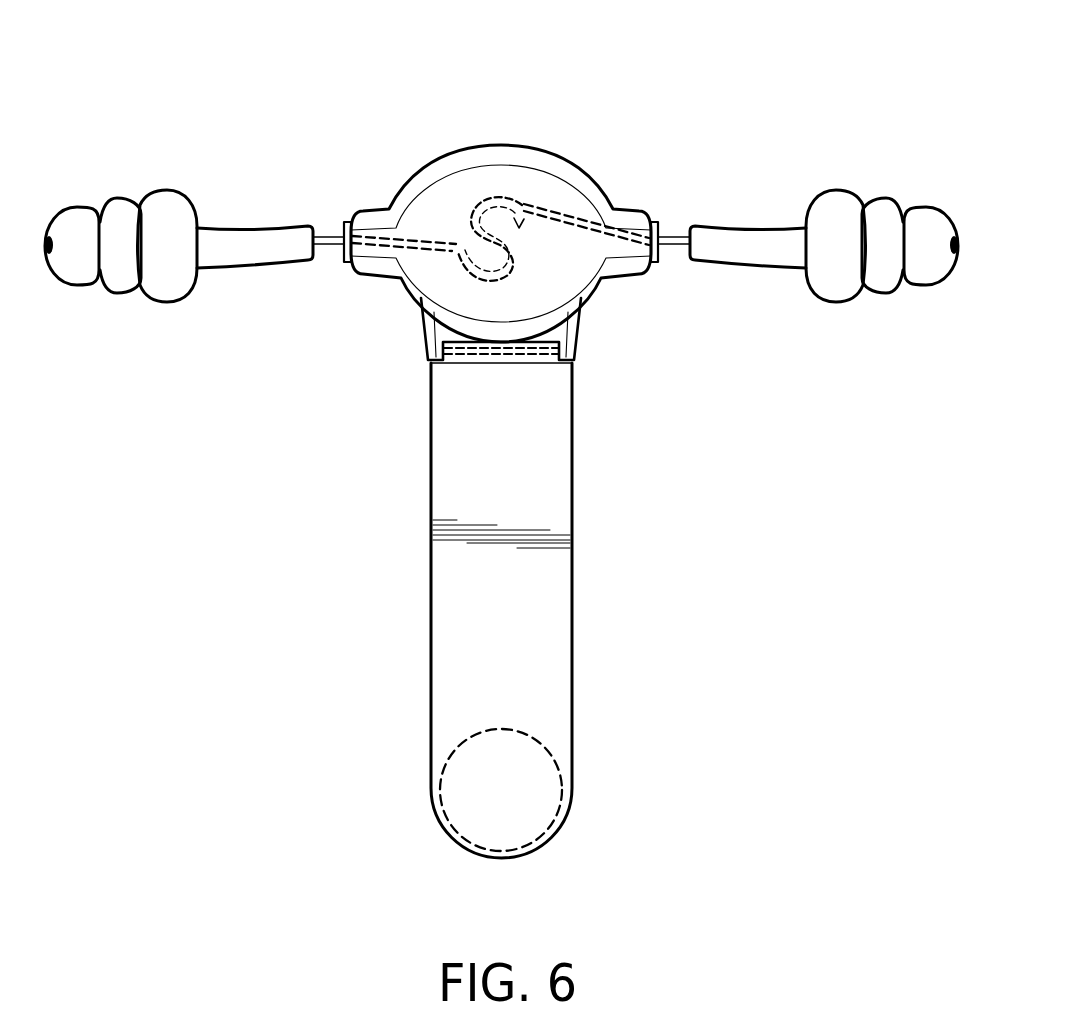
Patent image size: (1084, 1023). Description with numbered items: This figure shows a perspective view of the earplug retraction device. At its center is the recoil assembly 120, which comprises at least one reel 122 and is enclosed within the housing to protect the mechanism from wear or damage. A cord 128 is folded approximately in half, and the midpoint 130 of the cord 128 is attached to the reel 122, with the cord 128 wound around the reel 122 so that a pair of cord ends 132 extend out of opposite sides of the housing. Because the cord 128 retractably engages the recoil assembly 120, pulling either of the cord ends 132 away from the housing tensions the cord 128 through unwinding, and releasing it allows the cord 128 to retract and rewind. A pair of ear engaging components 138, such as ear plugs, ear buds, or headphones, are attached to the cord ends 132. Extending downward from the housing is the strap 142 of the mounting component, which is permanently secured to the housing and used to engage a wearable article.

The recoil assembly 120 is at (487, 178).
The reel 122 is at (509, 203).
The cord 128 is at (725, 278).
The midpoint 130 is at (513, 247).
The cord ends 132 is at (332, 238).
The ear engaging components 138 is at (148, 204).
The strap 142 is at (590, 589).